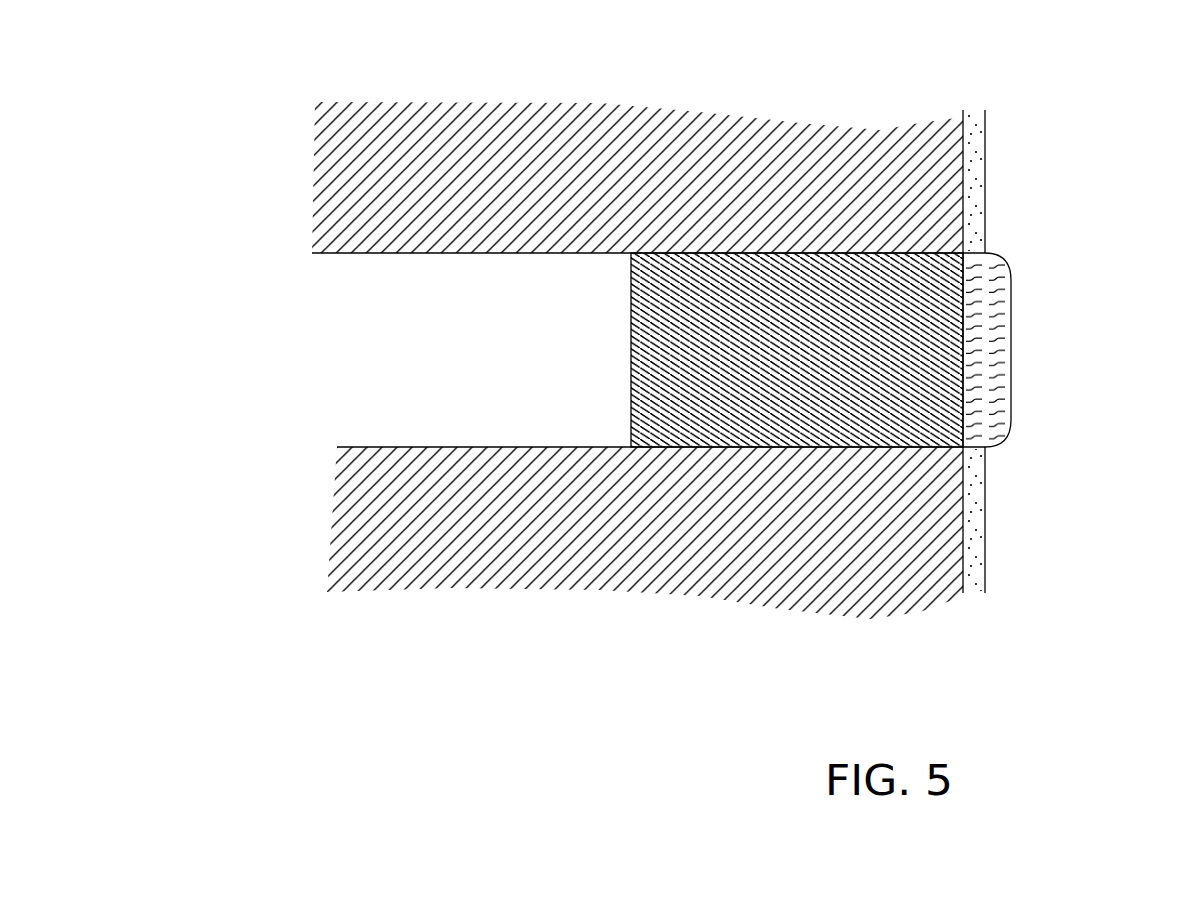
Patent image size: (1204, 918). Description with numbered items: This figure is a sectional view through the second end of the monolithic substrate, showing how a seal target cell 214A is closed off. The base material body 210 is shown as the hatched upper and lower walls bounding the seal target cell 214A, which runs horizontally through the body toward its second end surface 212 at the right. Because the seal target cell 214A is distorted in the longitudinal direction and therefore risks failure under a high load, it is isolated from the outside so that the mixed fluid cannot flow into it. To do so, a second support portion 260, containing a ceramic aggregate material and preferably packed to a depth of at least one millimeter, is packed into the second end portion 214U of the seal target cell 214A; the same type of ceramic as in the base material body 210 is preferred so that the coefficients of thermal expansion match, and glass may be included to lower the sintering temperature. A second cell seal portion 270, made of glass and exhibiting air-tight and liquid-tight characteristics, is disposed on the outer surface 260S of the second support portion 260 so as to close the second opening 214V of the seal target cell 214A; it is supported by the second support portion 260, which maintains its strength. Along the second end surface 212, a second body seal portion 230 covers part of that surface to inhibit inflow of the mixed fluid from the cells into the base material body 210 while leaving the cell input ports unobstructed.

The base material body 210 is at (323, 165).
The second end surface 212 is at (966, 203).
The seal target cell 214A is at (343, 358).
The second end portion 214U is at (663, 450).
The second opening 214V is at (978, 385).
The second body seal portion 230 is at (986, 153).
The second support portion 260 is at (730, 307).
The outer surface 260S is at (962, 290).
The second cell seal portion 270 is at (1012, 342).